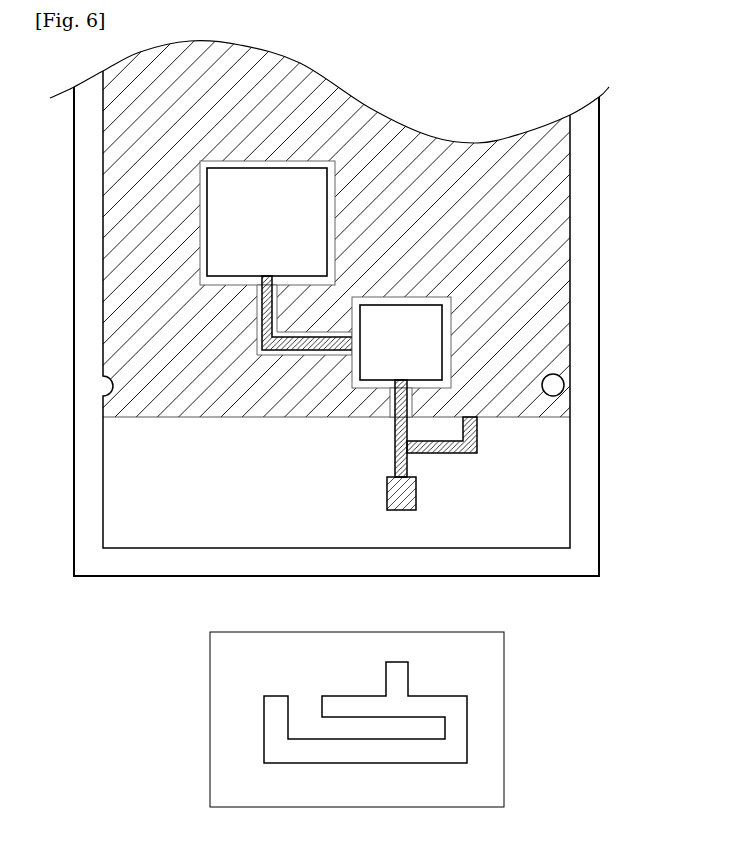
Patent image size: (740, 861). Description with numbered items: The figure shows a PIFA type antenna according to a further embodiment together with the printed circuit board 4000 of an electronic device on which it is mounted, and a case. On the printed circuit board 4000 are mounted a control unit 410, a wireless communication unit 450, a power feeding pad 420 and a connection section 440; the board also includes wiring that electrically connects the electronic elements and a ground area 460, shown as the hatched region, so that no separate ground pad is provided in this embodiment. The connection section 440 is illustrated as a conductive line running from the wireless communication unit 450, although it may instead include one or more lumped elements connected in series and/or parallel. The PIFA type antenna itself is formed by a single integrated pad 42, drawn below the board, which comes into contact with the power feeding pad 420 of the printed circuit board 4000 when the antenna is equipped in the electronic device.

The printed circuit board 4000 is at (570, 132).
The ground area 460 is at (538, 217).
The control unit 410 is at (232, 222).
The wireless communication unit 450 is at (420, 345).
The connection section 440 is at (435, 440).
The power feeding pad 420 is at (393, 520).
The integrated pad 42 is at (402, 675).